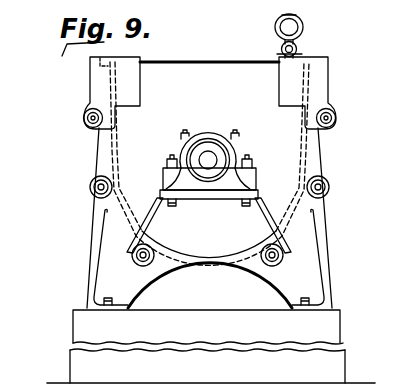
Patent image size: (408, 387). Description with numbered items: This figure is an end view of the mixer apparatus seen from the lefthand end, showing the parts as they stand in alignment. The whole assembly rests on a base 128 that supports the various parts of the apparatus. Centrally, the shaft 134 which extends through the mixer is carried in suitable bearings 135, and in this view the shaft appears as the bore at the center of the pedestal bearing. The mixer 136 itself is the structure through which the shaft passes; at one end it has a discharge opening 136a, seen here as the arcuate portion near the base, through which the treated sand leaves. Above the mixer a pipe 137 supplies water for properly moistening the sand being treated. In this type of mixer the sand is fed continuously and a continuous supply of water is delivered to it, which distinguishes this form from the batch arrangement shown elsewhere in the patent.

The base 128 is at (370, 307).
The shaft 134 is at (209, 160).
The bearings 135 is at (222, 134).
The mixer 136 is at (317, 149).
The discharge opening 136a is at (215, 243).
The pipe 137 is at (276, 22).